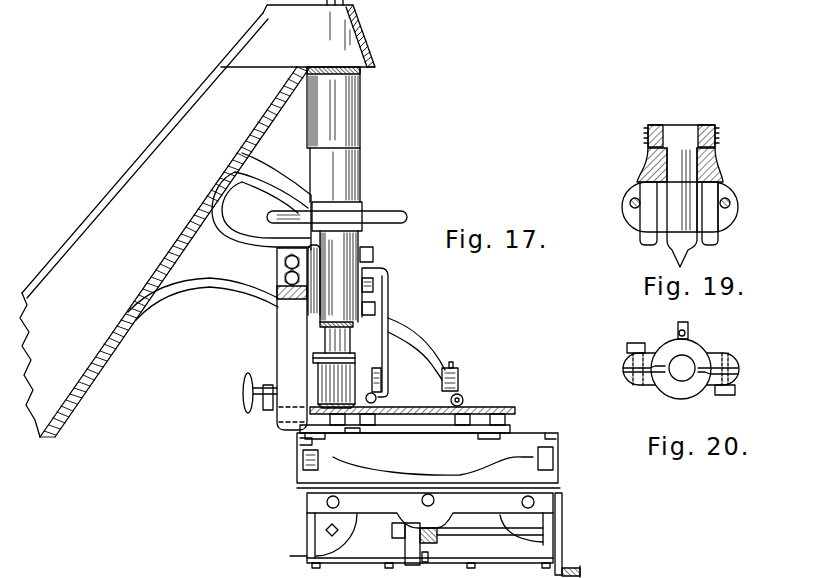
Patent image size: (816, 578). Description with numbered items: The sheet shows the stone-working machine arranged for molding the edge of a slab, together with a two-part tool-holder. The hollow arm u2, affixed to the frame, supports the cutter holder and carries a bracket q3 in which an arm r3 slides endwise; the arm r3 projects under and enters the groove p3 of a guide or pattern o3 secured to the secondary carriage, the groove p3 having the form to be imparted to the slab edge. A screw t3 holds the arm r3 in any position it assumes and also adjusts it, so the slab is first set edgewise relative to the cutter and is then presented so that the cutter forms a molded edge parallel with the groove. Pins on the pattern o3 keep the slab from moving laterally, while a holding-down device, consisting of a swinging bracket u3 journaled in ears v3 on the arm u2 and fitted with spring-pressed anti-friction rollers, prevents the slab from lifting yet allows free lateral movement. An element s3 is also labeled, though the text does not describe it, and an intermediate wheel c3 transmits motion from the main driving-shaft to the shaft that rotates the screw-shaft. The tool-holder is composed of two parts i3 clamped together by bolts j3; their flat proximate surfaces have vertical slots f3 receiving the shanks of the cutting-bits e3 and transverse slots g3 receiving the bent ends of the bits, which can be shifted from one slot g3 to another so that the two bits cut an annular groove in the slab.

In FIG. 17, the hollow arm u2 is at (165, 225).
In FIG. 17, the bracket q3 is at (292, 339).
In FIG. 17, the screw t3 is at (263, 383).
In FIG. 17, the ears v3 is at (379, 252).
In FIG. 17, the swinging bracket u3 is at (398, 317).
In FIG. 17, the guide or pattern o3 is at (516, 412).
In FIG. 17, the groove p3 is at (508, 427).
In FIG. 17, the arm r3 is at (298, 439).
In FIG. 17, the stop block s3 is at (362, 433).
In FIG. 19, the transverse slots g3 is at (640, 188).
In FIG. 19, the cutting-bits e3 is at (645, 238).
In FIG. 19, the tool-holder parts i3 is at (728, 190).
In FIG. 20, the tool-holder parts i3 is at (702, 348).
In FIG. 19, the bolts j3 is at (630, 207).
In FIG. 20, the bolts j3 is at (634, 343).
In FIG. 19, the intermediate wheel c3 is at (690, 252).
In FIG. 20, the vertical slots f3 is at (636, 392).